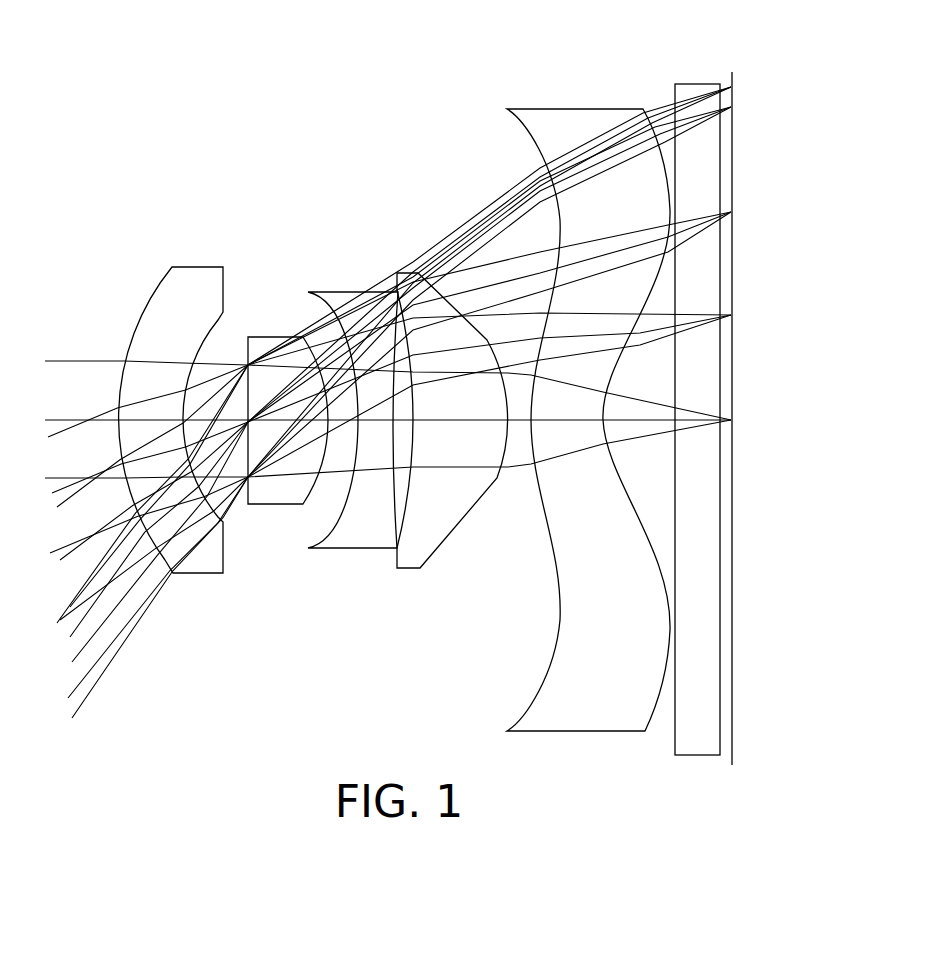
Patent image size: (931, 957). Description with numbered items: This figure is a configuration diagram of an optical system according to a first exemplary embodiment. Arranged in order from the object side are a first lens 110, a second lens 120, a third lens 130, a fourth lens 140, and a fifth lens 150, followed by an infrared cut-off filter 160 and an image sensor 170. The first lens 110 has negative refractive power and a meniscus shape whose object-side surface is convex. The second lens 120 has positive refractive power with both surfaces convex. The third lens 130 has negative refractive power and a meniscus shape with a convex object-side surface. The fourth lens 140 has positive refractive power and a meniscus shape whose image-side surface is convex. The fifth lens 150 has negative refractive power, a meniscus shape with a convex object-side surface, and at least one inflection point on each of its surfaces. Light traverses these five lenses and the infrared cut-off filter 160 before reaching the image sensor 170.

The first lens 110 is at (188, 275).
The second lens 120 is at (260, 345).
The third lens 130 is at (340, 297).
The fourth lens 140 is at (400, 268).
The fifth lens 150 is at (548, 117).
The infrared cut-off filter 160 is at (683, 85).
The image sensor 170 is at (731, 82).